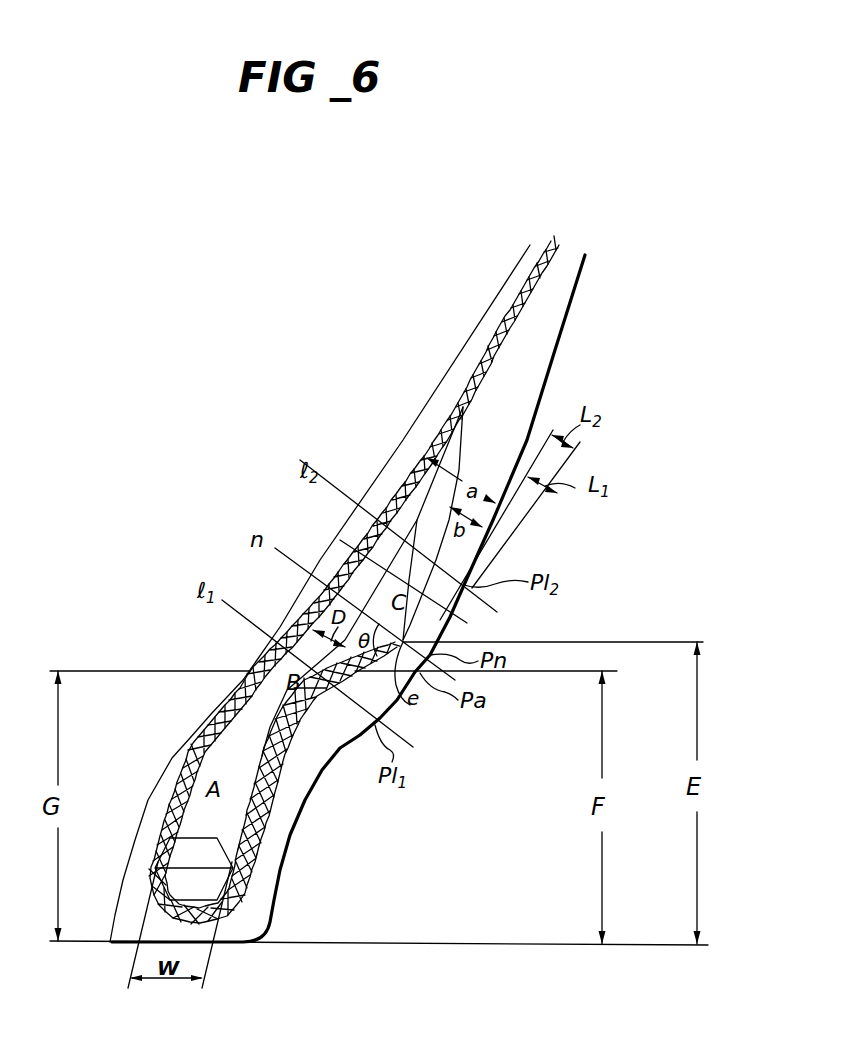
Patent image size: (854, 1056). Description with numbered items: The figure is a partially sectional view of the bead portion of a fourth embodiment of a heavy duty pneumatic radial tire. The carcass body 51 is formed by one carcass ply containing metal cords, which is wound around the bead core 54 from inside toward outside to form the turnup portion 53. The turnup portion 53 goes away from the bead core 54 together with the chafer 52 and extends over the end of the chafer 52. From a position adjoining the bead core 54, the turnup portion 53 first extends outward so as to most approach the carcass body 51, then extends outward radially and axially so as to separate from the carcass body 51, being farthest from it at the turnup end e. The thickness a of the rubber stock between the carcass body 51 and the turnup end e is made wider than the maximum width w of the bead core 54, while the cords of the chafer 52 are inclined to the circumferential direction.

The carcass body 51 is at (503, 330).
The chafer 52 is at (185, 768).
The turnup portion 53 is at (300, 733).
The bead core 54 is at (213, 858).